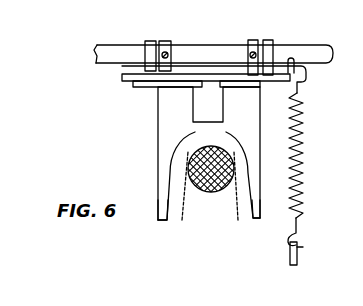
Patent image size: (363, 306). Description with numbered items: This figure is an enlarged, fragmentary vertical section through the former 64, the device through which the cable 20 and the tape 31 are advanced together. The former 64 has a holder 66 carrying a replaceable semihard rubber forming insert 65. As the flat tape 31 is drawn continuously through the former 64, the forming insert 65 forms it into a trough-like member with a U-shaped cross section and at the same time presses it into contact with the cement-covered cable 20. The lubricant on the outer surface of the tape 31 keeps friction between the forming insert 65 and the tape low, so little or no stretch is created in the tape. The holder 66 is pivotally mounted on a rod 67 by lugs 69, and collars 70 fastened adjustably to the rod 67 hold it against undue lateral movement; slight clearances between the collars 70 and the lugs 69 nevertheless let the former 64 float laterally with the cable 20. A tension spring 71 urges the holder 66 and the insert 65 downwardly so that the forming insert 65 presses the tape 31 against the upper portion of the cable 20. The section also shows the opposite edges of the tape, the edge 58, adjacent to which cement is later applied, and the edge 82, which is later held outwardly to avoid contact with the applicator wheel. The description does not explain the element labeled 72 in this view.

The cable 20 is at (209, 192).
The tape 31 is at (230, 210).
The edge 58 is at (181, 215).
The former 64 is at (155, 93).
The forming insert 65 is at (170, 223).
The holder 66 is at (181, 153).
The rod 67 is at (317, 64).
The lugs 69 is at (273, 43).
The collars 70 is at (248, 42).
The tension spring 71 is at (301, 131).
The slot 72 is at (215, 122).
The edge 82 is at (238, 220).